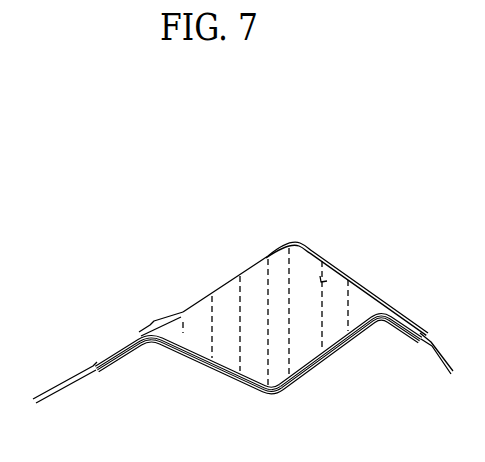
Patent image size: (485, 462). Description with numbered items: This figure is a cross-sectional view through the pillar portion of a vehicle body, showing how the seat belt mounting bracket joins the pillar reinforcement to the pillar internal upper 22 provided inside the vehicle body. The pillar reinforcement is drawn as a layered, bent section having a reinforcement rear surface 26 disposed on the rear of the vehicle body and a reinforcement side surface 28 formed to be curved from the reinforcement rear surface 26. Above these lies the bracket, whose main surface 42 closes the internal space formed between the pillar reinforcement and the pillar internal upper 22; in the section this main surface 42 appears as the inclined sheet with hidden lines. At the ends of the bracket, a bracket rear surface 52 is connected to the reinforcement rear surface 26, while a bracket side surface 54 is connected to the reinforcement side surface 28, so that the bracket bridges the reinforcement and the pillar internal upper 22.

The pillar internal upper 22 is at (299, 243).
The reinforcement rear surface 26 is at (252, 394).
The reinforcement side surface 28 is at (307, 378).
The main surface 42 is at (336, 252).
The bracket rear surface 52 is at (186, 350).
The bracket side surface 54 is at (363, 322).